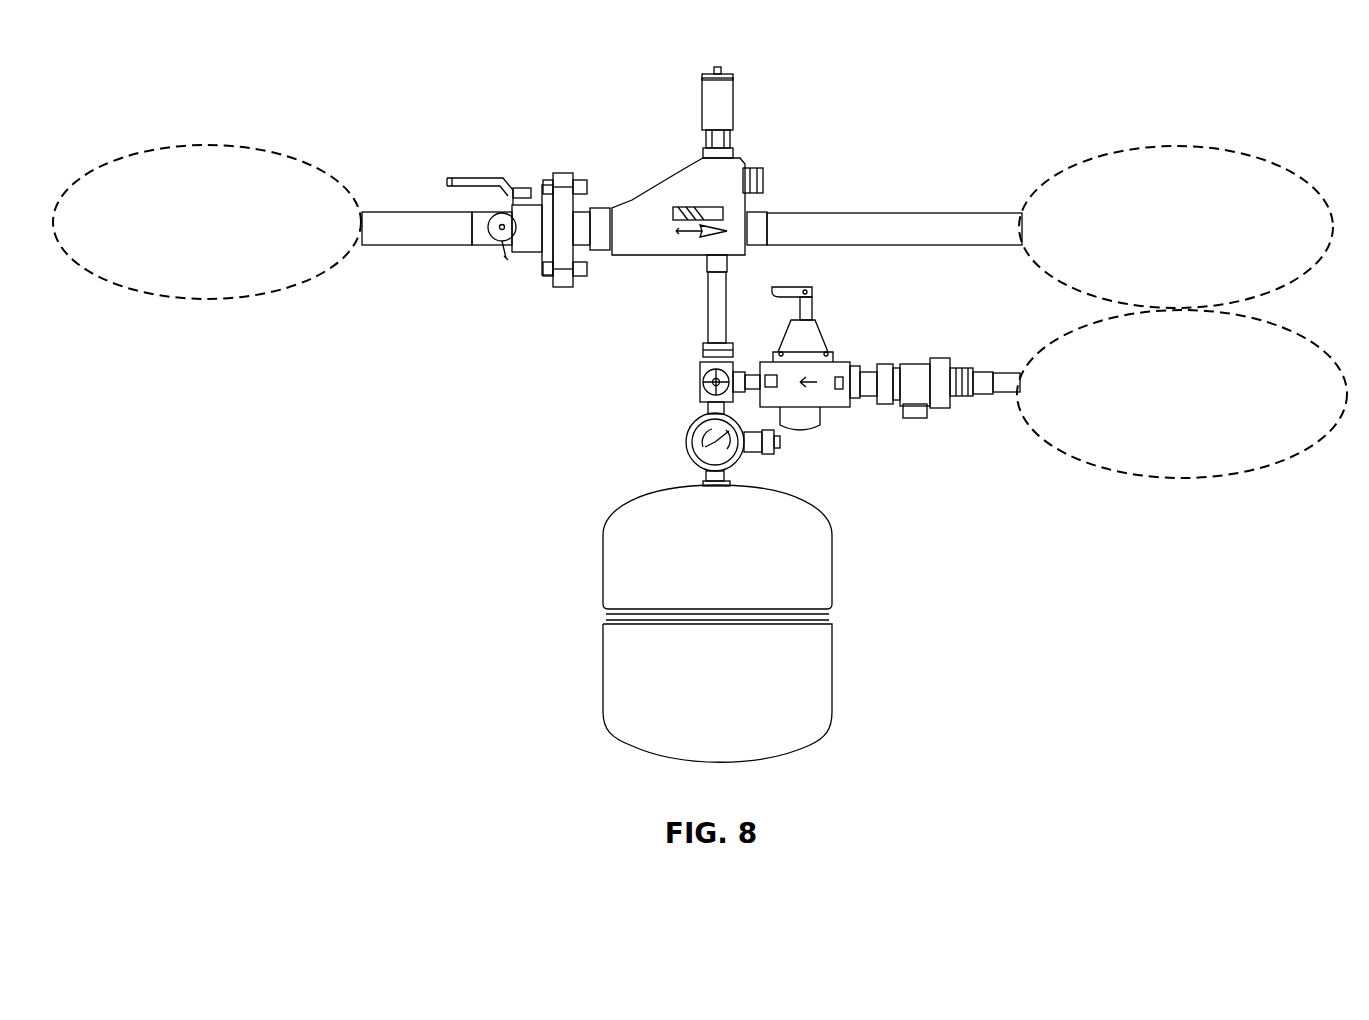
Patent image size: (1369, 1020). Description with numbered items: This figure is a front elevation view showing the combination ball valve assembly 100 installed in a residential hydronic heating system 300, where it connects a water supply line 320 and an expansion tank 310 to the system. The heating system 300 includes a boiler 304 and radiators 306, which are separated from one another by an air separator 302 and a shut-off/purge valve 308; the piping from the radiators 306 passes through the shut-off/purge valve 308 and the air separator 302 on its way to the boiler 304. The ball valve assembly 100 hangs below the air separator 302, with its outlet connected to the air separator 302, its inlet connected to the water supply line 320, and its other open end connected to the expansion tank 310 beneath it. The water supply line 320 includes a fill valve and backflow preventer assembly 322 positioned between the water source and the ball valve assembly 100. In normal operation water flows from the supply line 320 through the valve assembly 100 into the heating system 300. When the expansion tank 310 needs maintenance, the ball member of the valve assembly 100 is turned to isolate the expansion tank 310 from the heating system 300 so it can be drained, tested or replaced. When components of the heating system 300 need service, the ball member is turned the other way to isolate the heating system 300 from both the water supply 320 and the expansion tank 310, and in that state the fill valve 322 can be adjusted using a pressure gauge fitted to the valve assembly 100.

The residential hydronic heating system 300 is at (862, 136).
The air separator 302 is at (657, 180).
The boiler 304 is at (1134, 150).
The radiators 306 is at (289, 155).
The shut-off/purge valve 308 is at (525, 183).
The expansion tank 310 is at (833, 609).
The water supply line 320 is at (1020, 440).
The fill valve and backflow preventer assembly 322 is at (880, 350).
The combination ball valve assembly 100 is at (678, 404).